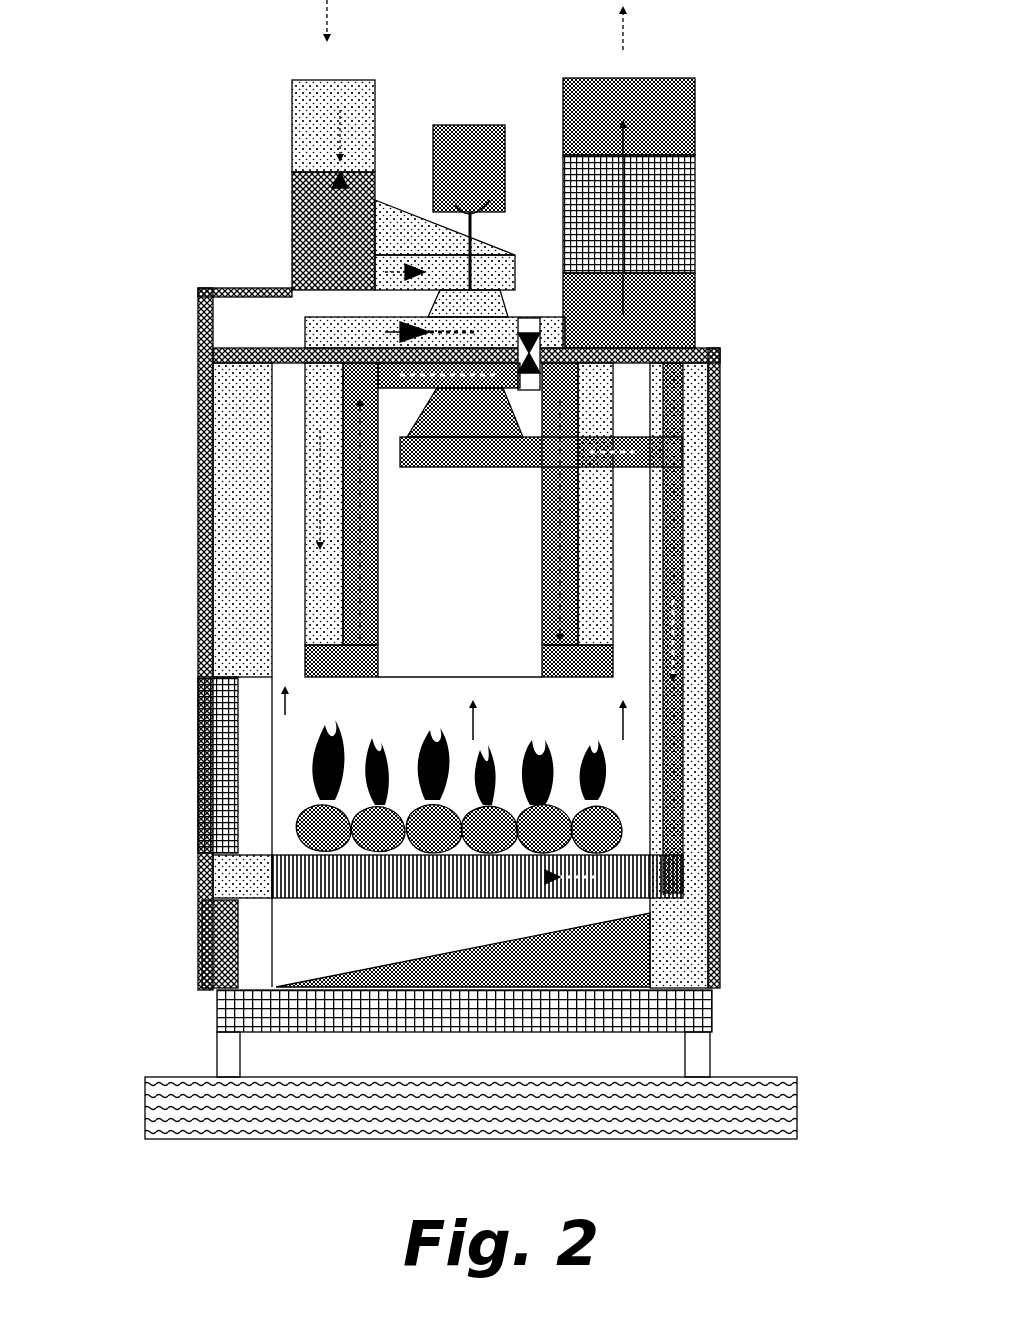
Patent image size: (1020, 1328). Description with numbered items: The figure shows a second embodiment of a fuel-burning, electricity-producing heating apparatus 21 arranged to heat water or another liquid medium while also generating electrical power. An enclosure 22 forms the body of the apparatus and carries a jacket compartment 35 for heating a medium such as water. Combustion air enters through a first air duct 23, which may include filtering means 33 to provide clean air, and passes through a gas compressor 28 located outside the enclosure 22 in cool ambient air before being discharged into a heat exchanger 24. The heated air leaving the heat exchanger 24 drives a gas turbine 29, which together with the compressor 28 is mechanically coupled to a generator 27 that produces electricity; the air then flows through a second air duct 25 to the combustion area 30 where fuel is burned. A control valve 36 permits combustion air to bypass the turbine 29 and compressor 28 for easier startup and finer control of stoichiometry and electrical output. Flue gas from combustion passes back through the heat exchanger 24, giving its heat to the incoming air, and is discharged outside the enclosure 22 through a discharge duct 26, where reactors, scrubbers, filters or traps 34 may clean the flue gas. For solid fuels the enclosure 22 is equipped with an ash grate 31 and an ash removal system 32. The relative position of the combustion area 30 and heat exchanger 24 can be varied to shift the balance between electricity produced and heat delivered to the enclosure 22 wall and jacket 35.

The fuel-burning, electricity-producing heating apparatus 21 is at (172, 1018).
The enclosure 22 is at (202, 432).
The first air duct 23 is at (313, 157).
The heat exchanger 24 is at (592, 523).
The second air duct 25 is at (670, 770).
The discharge duct 26 is at (660, 130).
The generator 27 is at (490, 157).
The gas compressor 28 is at (475, 300).
The gas turbine 29 is at (480, 428).
The combustion area 30 is at (337, 793).
The ash grate 31 is at (532, 897).
The ash removal system 32 is at (530, 950).
The filter 33 is at (295, 222).
The reactors, scrubbers, precipitators, filters, traps, or the like 34 is at (647, 230).
The jacket compartment 35 is at (233, 562).
The control valve 36 is at (578, 365).